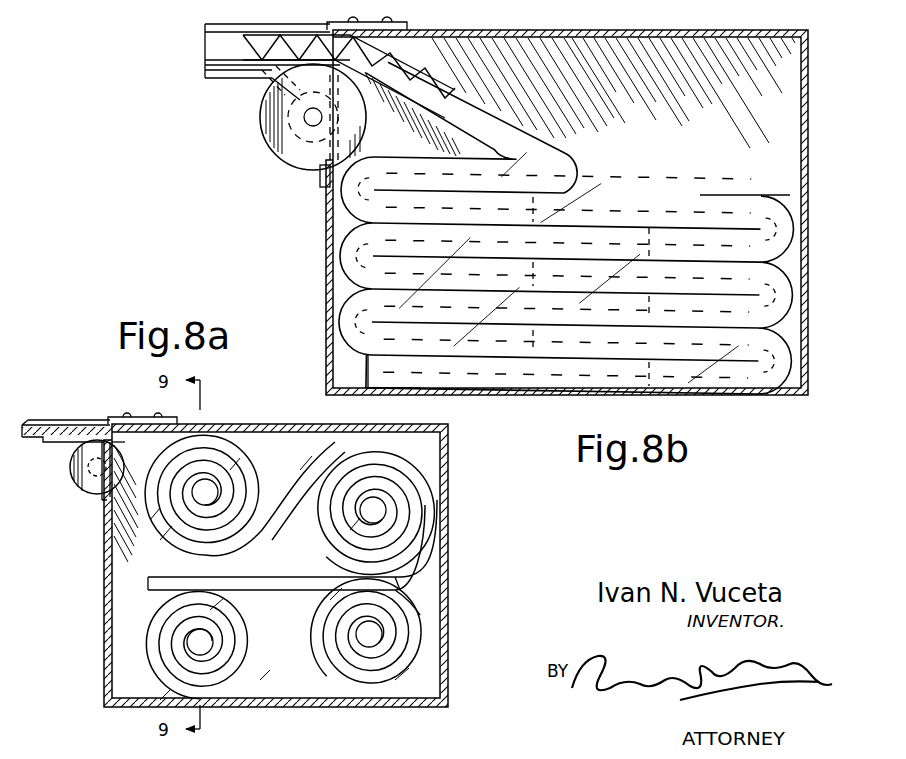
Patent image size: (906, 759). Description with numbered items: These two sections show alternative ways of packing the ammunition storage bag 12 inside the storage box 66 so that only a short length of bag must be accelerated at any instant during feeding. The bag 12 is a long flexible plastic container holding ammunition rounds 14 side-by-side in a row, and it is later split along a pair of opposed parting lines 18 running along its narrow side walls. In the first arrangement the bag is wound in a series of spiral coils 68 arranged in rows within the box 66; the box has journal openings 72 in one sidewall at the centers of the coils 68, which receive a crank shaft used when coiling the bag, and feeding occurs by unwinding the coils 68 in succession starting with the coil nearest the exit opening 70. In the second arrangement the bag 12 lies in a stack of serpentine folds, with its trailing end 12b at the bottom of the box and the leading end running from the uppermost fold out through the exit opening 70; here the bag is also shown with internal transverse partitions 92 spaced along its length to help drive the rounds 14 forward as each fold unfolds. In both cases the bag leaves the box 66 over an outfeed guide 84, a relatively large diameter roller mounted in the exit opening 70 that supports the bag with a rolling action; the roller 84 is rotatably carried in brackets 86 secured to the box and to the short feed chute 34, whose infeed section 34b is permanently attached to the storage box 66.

In FIG. 8B, the ammunition storage bag 12 is at (568, 152).
In FIG. 8A, the ammunition storage bag 12 is at (273, 494).
In FIG. 8B, the trailing end 12b is at (552, 380).
In FIG. 8A, the trailing end 12b is at (212, 630).
In FIG. 8B, the ammunition rounds 14 is at (440, 80).
In FIG. 8B, the parting lines 18 is at (695, 200).
In FIG. 8B, the feed chute 34 is at (205, 26).
In FIG. 8A, the feed chute 34 is at (58, 418).
In FIG. 8B, the infeed section 34b is at (332, 22).
In FIG. 8A, the infeed section 34b is at (100, 407).
In FIG. 8B, the storage box 66 is at (716, 28).
In FIG. 8A, the storage box 66 is at (452, 592).
In FIG. 8A, the spiral coils 68 is at (167, 566).
In FIG. 8A, the exit opening 70 is at (120, 445).
In FIG. 8A, the journal openings 72 is at (200, 494).
In FIG. 8B, the outfeed guide 84 is at (292, 163).
In FIG. 8A, the outfeed guide 84 is at (67, 476).
In FIG. 8B, the brackets 86 is at (233, 82).
In FIG. 8B, the internal transverse partitions 92 is at (455, 110).